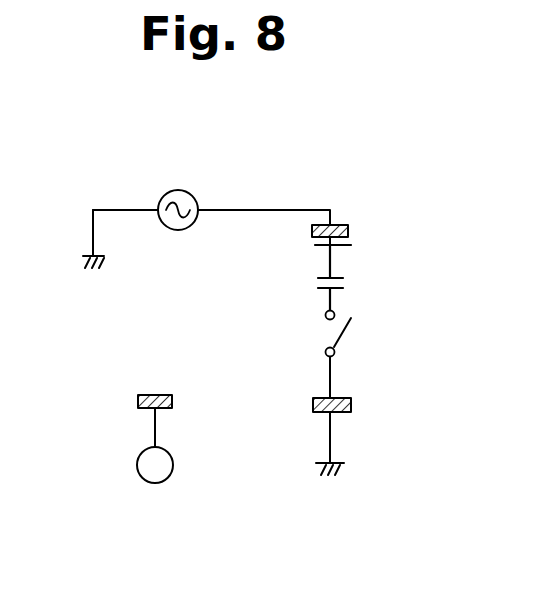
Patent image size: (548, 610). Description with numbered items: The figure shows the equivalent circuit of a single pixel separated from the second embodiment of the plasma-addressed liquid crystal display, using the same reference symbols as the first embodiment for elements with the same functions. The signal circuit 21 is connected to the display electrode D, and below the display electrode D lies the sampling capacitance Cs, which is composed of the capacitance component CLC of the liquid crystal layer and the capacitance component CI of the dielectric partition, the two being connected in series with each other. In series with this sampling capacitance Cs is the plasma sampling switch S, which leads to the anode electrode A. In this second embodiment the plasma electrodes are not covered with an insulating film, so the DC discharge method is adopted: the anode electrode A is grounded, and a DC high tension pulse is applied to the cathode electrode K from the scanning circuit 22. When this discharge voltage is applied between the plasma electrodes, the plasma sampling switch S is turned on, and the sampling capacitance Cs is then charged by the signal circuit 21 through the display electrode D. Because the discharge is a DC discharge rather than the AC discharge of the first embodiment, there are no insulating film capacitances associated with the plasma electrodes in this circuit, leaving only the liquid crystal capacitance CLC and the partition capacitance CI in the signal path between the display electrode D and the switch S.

The signal circuit 21 is at (178, 190).
The scanning circuit 22 is at (158, 483).
The display electrode D is at (349, 231).
The capacitance component of the liquid crystal layer CLC is at (363, 261).
The capacitance component of the dielectric partition CI is at (355, 295).
The sampling capacitance Cs is at (310, 262).
The plasma sampling switch S is at (350, 334).
The anode electrode A is at (345, 407).
The cathode electrode K is at (305, 335).